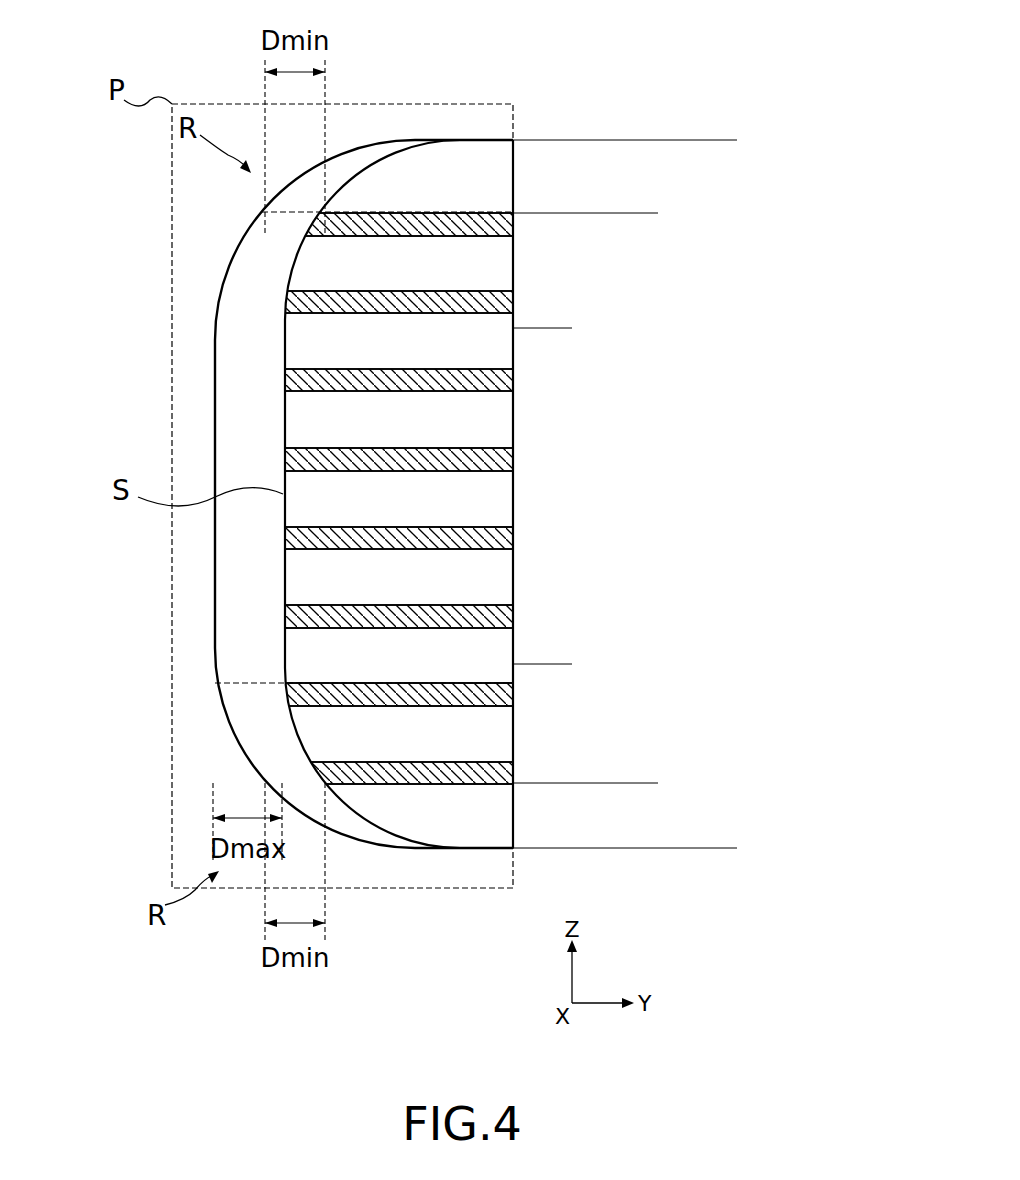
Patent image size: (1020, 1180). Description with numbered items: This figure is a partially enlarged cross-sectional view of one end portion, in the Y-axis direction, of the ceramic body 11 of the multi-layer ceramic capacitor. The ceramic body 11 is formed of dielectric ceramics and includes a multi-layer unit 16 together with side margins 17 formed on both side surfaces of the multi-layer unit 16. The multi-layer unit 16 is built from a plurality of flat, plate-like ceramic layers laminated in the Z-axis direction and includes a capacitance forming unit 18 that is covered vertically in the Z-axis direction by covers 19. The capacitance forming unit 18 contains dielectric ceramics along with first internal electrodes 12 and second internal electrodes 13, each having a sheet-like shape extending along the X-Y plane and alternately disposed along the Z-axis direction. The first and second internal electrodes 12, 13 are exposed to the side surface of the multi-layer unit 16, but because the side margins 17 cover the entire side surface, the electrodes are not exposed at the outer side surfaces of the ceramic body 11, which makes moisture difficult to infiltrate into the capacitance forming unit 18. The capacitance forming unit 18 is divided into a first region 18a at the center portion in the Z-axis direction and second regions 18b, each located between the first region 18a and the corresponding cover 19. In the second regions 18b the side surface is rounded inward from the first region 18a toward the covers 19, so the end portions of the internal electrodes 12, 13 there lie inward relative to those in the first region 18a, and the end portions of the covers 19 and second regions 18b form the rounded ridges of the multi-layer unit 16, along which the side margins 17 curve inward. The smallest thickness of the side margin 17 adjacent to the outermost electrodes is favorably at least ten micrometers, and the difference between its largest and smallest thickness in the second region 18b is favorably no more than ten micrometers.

The multilayer body 11 is at (404, 483).
The internal electrode layer 12 is at (338, 377).
The dielectric layer 13 is at (430, 447).
The laminated portion 16 is at (712, 140).
The side margin portion 17 is at (238, 447).
The inner layer portion 18 is at (632, 215).
The central inner layer portion 18a is at (553, 330).
The end inner layer portion 18b is at (553, 215).
The outer layer portion 19 is at (630, 140).